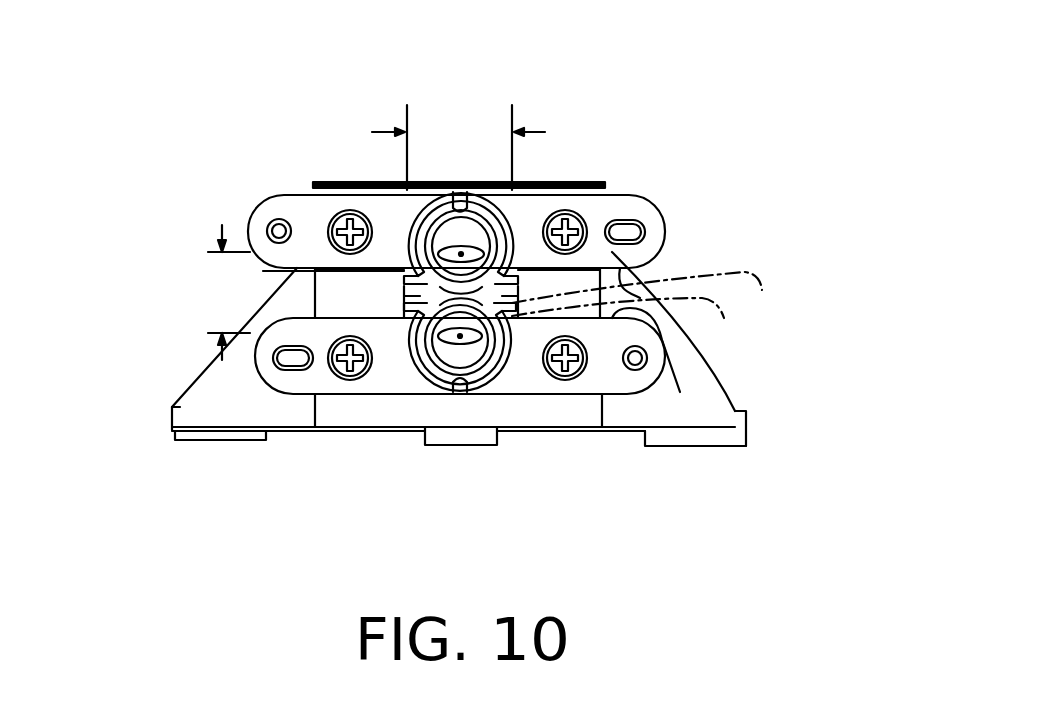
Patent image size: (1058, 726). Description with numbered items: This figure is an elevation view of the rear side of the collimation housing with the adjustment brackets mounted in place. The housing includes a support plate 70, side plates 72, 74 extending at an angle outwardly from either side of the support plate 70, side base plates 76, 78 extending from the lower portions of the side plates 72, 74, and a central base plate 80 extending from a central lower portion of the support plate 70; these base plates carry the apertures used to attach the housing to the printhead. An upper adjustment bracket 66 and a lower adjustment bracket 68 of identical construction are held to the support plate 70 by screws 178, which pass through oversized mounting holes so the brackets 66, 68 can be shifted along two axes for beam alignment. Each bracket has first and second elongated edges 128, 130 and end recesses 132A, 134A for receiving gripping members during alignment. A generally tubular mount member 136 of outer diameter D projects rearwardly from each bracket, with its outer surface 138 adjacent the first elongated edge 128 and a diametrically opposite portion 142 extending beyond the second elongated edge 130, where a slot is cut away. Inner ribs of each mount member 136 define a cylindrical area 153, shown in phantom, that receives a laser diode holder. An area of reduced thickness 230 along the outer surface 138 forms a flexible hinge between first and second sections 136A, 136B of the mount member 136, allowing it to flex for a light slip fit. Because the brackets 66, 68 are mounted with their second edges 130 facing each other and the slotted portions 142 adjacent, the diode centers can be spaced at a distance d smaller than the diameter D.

The upper adjustment bracket 66 is at (485, 296).
The lower adjustment bracket 68 is at (407, 402).
The support plate 70 is at (327, 182).
The side plate 72 is at (217, 378).
The side plate 74 is at (680, 380).
The side base plate 76 is at (203, 441).
The side base plate 78 is at (723, 447).
The central base plate 80 is at (481, 445).
The first elongated edge 128 is at (618, 195).
The second elongated edge 130 is at (655, 268).
The recess 132A is at (648, 218).
The recess 134A is at (268, 222).
The mount member 136 is at (489, 277).
The first section of mount member 136A is at (373, 183).
The second section of mount member 136B is at (510, 283).
The outer surface 138 is at (640, 278).
The diametrically opposite portion 142 is at (404, 270).
The cylindrical area 153 is at (650, 317).
The screws 178 is at (332, 222).
The area of reduced thickness 230 is at (474, 167).